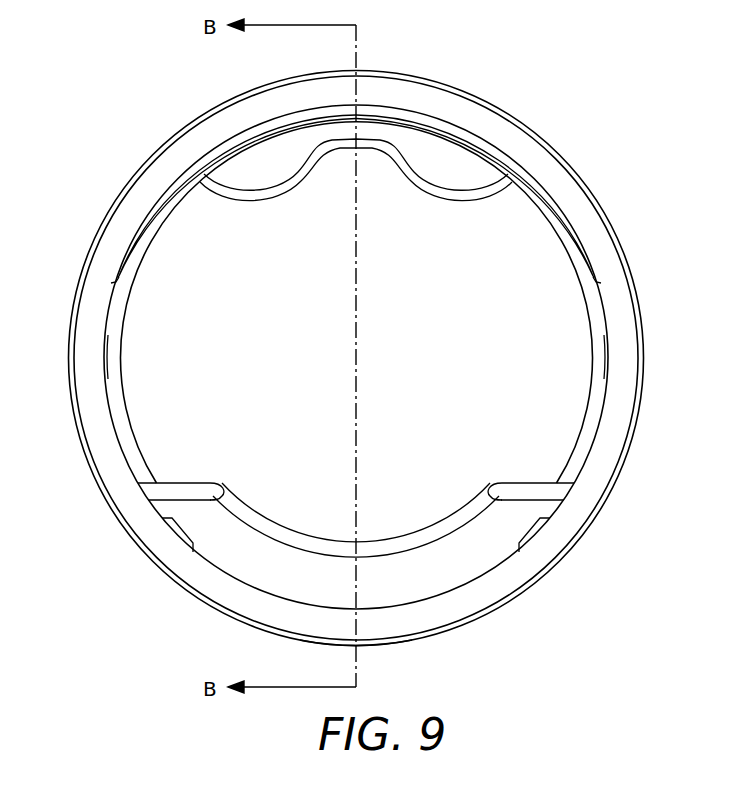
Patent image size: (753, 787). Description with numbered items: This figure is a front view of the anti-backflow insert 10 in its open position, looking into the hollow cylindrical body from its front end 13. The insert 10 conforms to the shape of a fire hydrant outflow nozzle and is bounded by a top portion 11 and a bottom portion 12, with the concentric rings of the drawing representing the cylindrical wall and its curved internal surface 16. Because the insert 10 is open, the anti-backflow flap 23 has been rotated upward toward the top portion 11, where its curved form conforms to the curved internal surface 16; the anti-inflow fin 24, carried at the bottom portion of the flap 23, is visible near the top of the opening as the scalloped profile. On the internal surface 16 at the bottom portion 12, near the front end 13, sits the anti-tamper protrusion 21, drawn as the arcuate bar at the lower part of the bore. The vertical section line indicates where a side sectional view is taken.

The anti-backflow insert 10 is at (603, 93).
The top portion 11 is at (450, 90).
The bottom portion 12 is at (378, 645).
The front end 13 is at (624, 351).
The internal surface 16 is at (140, 412).
The anti-tamper protrusion 21 is at (428, 533).
The anti-backflow flap 23 is at (130, 253).
The anti-inflow fin 24 is at (454, 178).